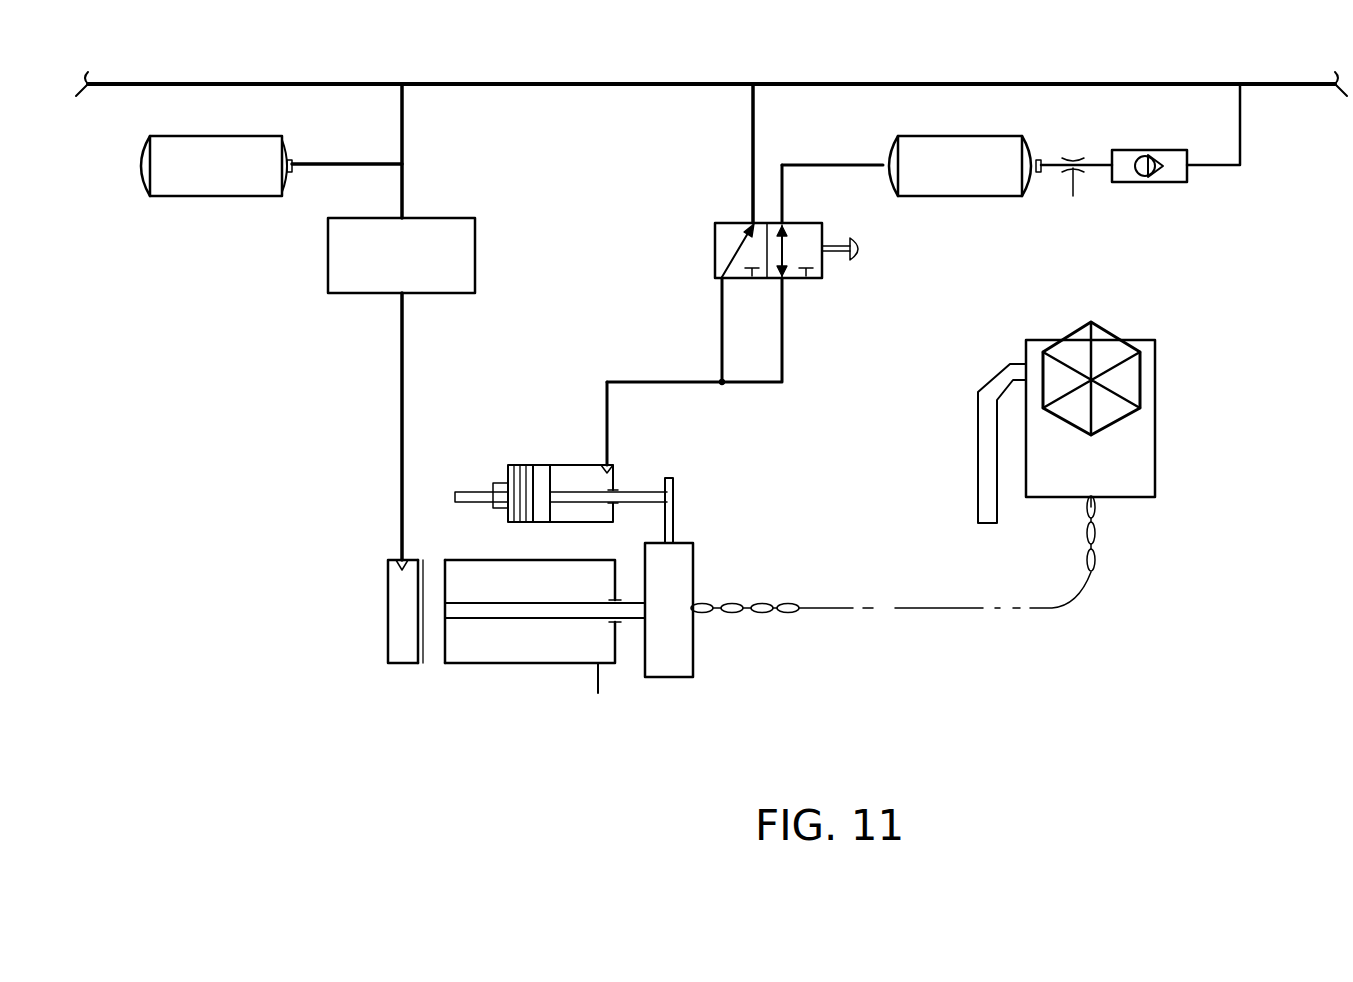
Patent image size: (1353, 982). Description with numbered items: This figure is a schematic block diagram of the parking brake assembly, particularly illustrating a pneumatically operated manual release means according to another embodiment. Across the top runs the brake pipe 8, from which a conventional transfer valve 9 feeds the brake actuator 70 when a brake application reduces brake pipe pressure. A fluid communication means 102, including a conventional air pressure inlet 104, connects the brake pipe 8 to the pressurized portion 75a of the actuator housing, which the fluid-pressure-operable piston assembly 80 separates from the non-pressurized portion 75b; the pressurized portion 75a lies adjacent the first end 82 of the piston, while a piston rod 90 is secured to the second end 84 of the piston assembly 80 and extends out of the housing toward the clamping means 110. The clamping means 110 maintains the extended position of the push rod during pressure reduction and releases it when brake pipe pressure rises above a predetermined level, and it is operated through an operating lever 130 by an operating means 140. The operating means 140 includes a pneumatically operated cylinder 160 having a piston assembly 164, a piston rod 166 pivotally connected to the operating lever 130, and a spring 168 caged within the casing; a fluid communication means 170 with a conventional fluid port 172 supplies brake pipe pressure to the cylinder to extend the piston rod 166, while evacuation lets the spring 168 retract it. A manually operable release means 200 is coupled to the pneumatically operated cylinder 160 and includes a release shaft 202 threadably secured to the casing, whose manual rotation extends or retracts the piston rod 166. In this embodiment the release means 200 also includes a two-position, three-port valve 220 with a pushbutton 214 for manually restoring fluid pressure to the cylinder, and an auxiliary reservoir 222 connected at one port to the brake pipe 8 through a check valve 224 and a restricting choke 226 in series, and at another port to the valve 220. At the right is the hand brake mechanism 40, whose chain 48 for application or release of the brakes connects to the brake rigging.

The brake pipe 8 is at (607, 83).
The transfer valve 9 is at (328, 265).
The hand brake mechanism 40 is at (1156, 396).
The chain 48 is at (790, 604).
The brake actuator 70 is at (489, 649).
The pressurized portion 75a is at (398, 613).
The non-pressurized portion 75b is at (577, 655).
The piston assembly 80 is at (415, 620).
The first end of the piston 82 is at (420, 643).
The second end of the piston assembly 84 is at (446, 645).
The piston rod 90 is at (528, 616).
The fluid communication means 102 is at (400, 380).
The air pressure inlet 104 is at (398, 560).
The clamping means 110 is at (696, 664).
The operating lever 130 is at (676, 508).
The operating means 140 is at (555, 445).
The pneumatically operated cylinder 160 is at (536, 458).
The piston assembly 164 is at (541, 519).
The piston rod 166 is at (580, 496).
The spring 168 is at (522, 520).
The fluid communication means 170 is at (750, 125).
The fluid port 172 is at (610, 470).
The manually operable release means 200 is at (820, 360).
The release shaft 202 is at (470, 490).
The pushbutton 214 is at (862, 252).
The two-position, three-port valve 220 is at (728, 222).
The auxiliary reservoir 222 is at (935, 197).
The check valve 224 is at (1174, 183).
The restricting choke 226 is at (1076, 196).